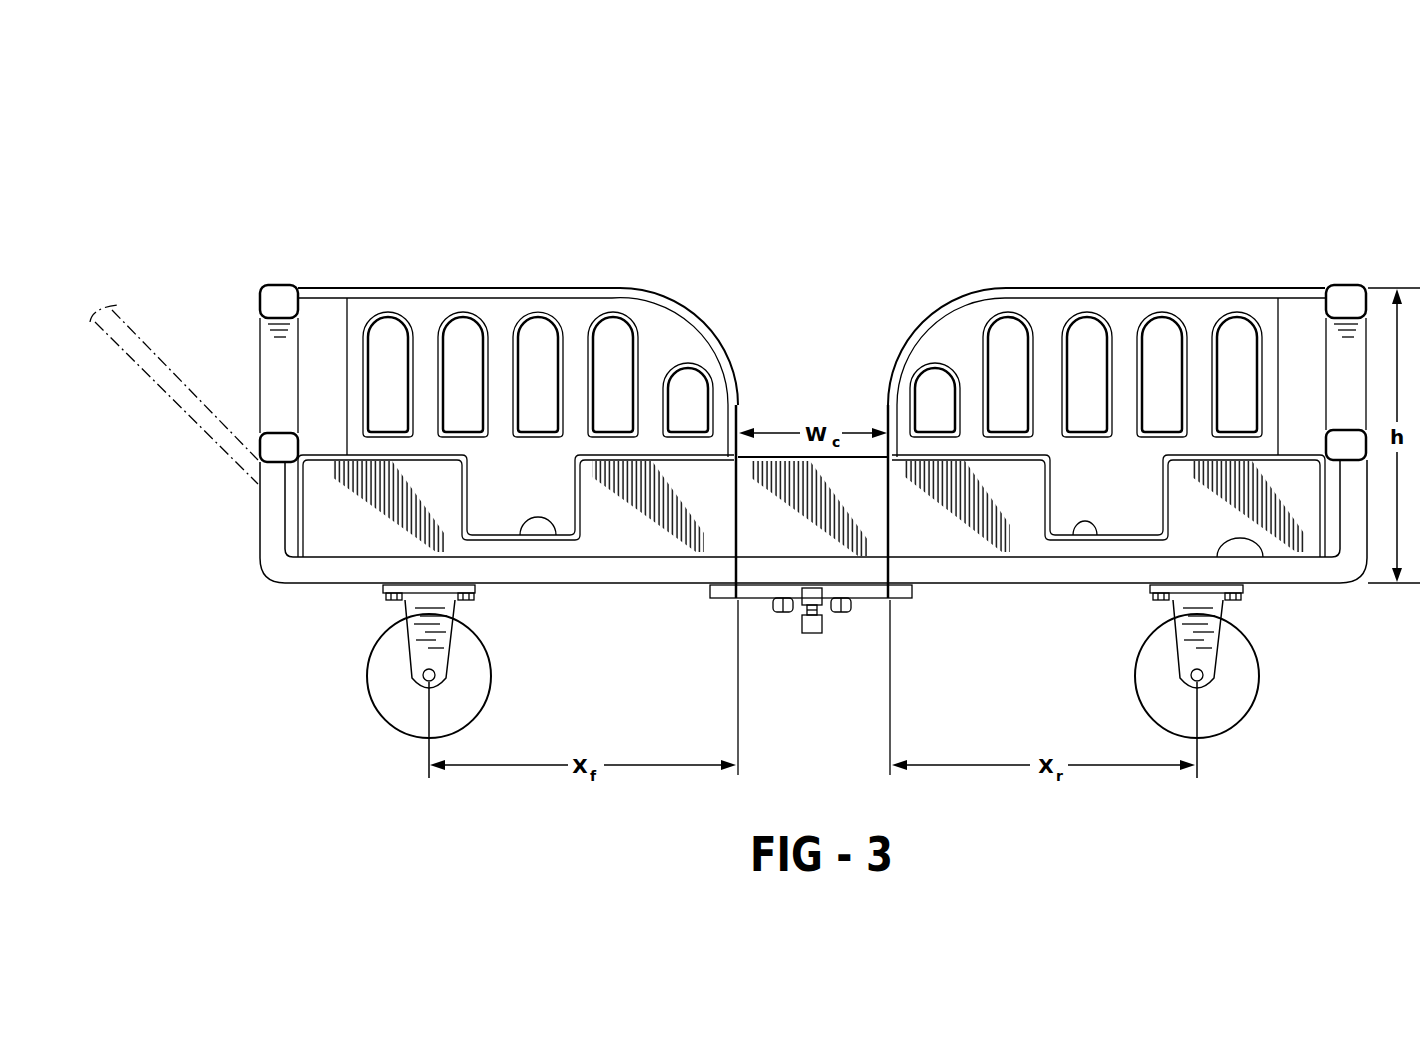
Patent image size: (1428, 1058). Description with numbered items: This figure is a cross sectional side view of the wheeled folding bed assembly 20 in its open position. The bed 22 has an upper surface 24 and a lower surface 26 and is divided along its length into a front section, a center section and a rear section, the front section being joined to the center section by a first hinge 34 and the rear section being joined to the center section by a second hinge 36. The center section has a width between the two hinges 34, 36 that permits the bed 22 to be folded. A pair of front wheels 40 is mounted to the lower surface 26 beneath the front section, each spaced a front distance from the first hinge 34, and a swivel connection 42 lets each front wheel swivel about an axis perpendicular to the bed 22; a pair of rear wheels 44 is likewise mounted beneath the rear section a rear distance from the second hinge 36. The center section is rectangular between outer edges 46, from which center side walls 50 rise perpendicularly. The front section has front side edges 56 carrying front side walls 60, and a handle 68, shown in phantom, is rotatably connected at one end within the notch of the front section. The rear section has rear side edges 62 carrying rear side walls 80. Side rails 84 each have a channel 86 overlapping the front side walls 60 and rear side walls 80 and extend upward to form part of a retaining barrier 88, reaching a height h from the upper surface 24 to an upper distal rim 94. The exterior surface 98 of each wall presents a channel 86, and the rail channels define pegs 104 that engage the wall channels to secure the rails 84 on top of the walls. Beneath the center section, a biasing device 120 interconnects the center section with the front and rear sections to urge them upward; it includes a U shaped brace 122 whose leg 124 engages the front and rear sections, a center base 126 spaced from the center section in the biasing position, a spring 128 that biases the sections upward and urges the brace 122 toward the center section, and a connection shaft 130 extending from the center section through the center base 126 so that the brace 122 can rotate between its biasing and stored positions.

The assembly 20 is at (1246, 150).
The bed 22 is at (258, 576).
The upper surface 24 is at (643, 557).
The lower surface 26 is at (543, 587).
The first hinge 34 is at (735, 598).
The second hinge 36 is at (917, 547).
The front wheels 40 is at (398, 710).
The swivel connection 42 is at (383, 590).
The rear wheels 44 is at (1240, 695).
The outer edges 46 is at (767, 553).
The center side walls 50 is at (872, 498).
The front side edges 56 is at (350, 557).
The front side walls 60 is at (595, 540).
The rear side edges 62 is at (1260, 557).
The handle 68 is at (215, 400).
The rear side walls 80 is at (1163, 513).
The side rails 84 is at (573, 320).
The channel 86 is at (557, 537).
The retaining barrier 88 is at (422, 287).
The upper distal rim 94 is at (368, 288).
The exterior surface 98 is at (498, 333).
The pegs 104 is at (1088, 478).
The biasing device 120 is at (852, 626).
The brace 122 is at (800, 635).
The leg 124 is at (773, 604).
The center base 126 is at (780, 613).
The spring 128 is at (826, 613).
The connection shaft 130 is at (813, 633).